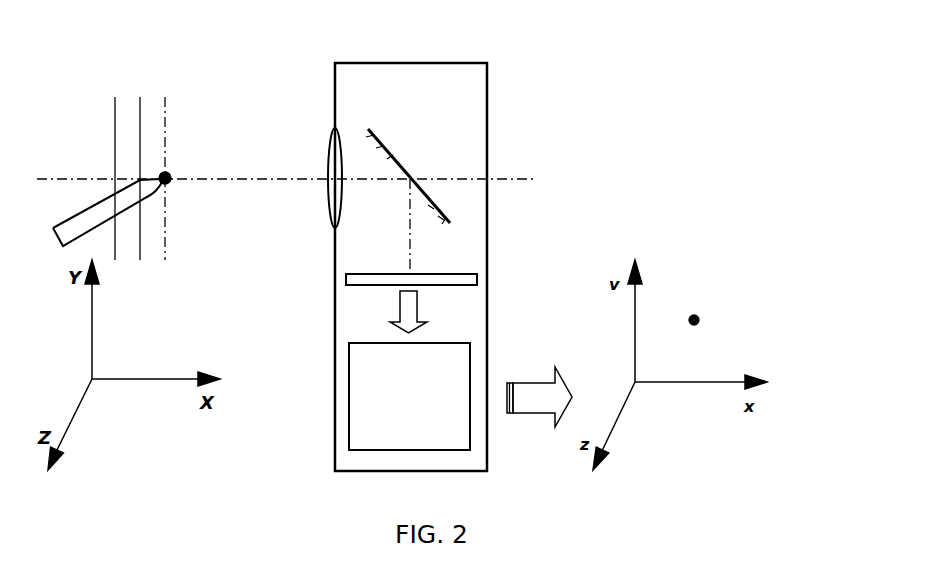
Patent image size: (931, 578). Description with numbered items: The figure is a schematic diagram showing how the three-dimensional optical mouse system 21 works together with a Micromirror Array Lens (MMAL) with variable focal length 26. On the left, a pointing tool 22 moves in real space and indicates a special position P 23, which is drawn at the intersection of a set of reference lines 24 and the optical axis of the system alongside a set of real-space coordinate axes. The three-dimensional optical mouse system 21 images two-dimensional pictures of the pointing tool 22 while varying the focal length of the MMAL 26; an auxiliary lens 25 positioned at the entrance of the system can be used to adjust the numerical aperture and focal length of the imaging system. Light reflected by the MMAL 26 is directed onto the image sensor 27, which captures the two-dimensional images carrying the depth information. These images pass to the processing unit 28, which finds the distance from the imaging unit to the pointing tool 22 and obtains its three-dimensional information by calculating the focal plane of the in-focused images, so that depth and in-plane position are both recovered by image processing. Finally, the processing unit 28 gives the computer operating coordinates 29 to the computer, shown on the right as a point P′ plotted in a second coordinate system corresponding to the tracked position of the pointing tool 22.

The three-dimensional optical mouse system 21 is at (332, 342).
The pointing tool 22 is at (53, 240).
The spatial position P 23 is at (195, 223).
The reference lines / axis 24 is at (167, 267).
The auxiliary lens 25 is at (325, 138).
The Micromirror Array Lens with variable focal length 26 is at (405, 160).
The image sensor 27 is at (450, 288).
The processing unit 28 is at (475, 403).
The computer operating coordinates 29 is at (750, 325).